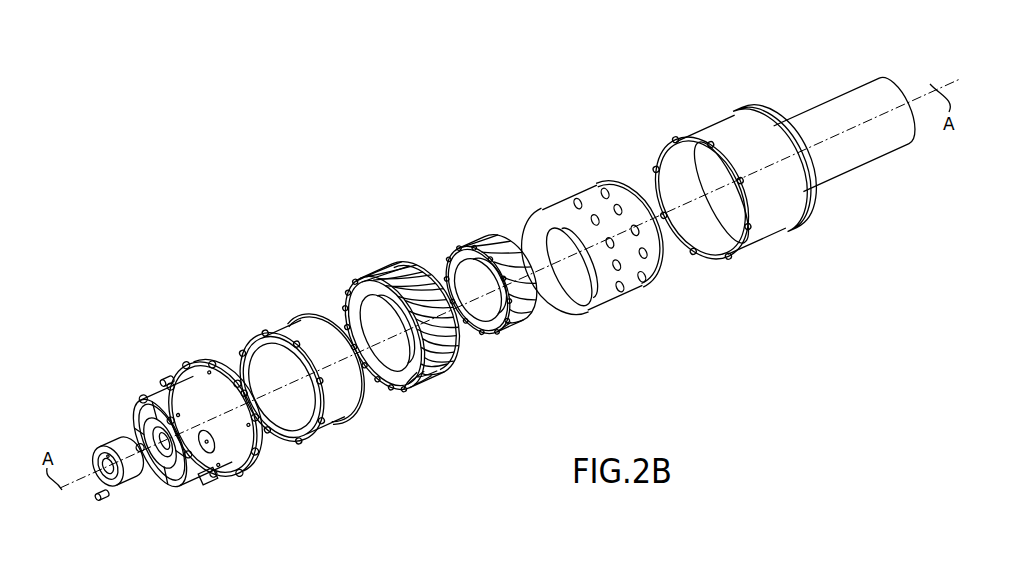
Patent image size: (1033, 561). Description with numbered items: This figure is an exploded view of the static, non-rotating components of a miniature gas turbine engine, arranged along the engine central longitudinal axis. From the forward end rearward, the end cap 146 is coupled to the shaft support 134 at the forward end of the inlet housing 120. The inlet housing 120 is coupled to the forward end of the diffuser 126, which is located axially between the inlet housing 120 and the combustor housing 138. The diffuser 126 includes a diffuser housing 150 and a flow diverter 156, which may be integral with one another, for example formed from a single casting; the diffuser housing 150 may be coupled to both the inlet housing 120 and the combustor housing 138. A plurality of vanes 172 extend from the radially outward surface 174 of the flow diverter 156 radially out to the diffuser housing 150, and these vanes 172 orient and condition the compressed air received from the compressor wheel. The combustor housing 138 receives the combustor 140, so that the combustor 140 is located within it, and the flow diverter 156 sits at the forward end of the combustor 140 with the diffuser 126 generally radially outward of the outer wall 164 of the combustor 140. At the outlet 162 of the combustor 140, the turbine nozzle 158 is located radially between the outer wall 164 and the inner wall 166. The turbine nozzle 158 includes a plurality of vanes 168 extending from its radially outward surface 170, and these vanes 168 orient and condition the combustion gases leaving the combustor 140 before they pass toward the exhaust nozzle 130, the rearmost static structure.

The inlet housing 120 is at (193, 383).
The diffuser 126 is at (301, 334).
The exhaust nozzle 130 is at (827, 113).
The shaft support 134 is at (172, 478).
The combustor housing 138 is at (715, 123).
The combustor 140 is at (547, 226).
The end cap 146 is at (107, 443).
The diffuser housing 150 is at (285, 330).
The flow diverter 156 is at (345, 296).
The turbine nozzle 158 is at (482, 254).
The outlet 162 is at (577, 307).
The outer wall 164 is at (592, 252).
The inner wall 166 is at (569, 284).
The vanes 168 is at (465, 246).
The radially outward surface 170 is at (500, 247).
The vanes 172 is at (409, 309).
The radially outward surface 174 is at (403, 278).